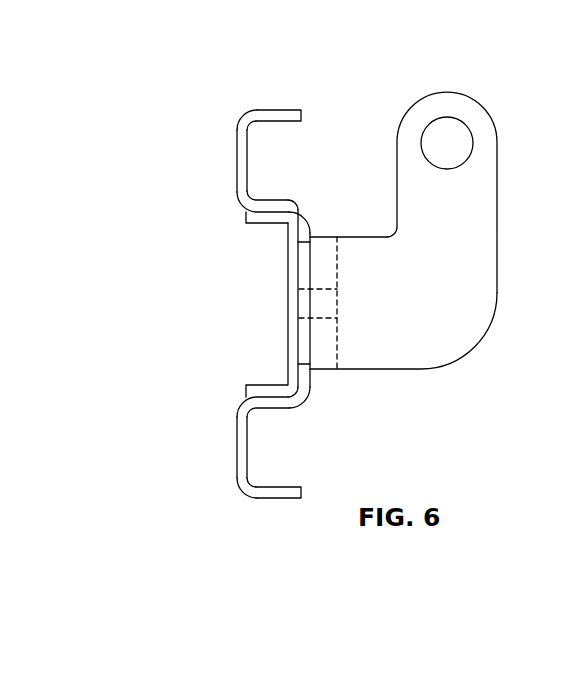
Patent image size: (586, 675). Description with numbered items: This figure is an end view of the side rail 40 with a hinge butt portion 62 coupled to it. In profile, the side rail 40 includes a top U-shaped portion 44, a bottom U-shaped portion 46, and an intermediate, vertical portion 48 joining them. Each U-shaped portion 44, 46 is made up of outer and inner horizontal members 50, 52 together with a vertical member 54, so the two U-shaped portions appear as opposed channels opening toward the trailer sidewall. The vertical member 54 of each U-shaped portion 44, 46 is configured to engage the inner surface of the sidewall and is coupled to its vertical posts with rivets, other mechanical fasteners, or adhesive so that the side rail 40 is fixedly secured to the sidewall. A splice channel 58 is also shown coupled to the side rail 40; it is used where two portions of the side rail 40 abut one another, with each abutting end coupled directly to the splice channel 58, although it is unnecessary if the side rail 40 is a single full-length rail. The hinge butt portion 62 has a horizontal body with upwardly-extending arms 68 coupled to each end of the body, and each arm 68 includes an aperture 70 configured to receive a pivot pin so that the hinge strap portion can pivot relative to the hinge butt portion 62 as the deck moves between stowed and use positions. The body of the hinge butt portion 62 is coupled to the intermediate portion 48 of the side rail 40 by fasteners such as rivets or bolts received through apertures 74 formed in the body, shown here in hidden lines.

The side rail 40 is at (250, 88).
The top U-shaped portion 44 is at (207, 127).
The bottom U-shaped portion 46 is at (227, 477).
The intermediate vertical portion 48 is at (300, 232).
The outer horizontal member 50 is at (272, 108).
The inner horizontal member 52 is at (273, 203).
The vertical member 54 is at (237, 160).
The splice channel 58 is at (293, 332).
The hinge butt portion 62 is at (497, 262).
The arm 68 is at (480, 219).
The aperture 70 is at (447, 118).
The aperture 74 is at (323, 317).